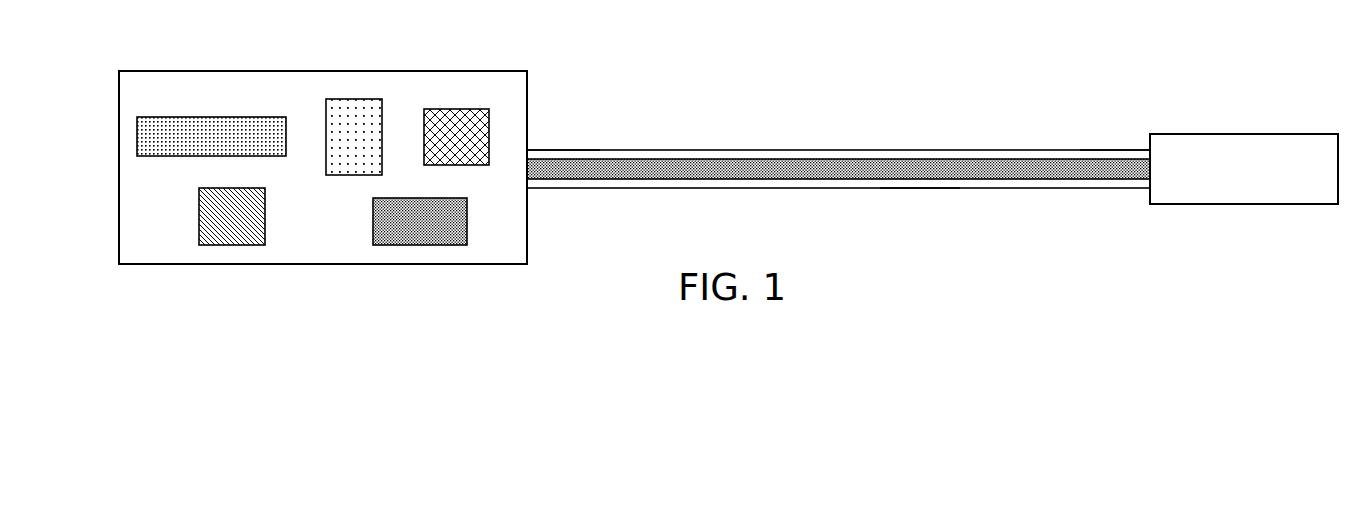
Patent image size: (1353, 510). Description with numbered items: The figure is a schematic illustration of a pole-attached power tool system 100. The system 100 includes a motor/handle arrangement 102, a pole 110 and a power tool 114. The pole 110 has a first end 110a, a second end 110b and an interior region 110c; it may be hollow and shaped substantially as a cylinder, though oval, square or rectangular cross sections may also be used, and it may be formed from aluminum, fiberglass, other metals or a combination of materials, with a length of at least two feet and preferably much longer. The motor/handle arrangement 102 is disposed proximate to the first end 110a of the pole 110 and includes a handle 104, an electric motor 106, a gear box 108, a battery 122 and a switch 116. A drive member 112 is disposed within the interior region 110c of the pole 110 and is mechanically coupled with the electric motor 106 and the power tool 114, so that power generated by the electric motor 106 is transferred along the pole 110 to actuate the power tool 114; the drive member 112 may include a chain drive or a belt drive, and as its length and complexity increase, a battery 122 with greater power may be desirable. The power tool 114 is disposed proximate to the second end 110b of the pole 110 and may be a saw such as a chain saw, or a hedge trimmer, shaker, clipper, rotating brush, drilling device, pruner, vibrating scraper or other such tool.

The pole-attached power tool system 100 is at (143, 25).
The motor/handle arrangement 102 is at (176, 71).
The handle 104 is at (223, 117).
The electric motor 106 is at (362, 99).
The gear box 108 is at (465, 109).
The pole 110 is at (738, 150).
The first end 110a is at (563, 118).
The second end 110b is at (1119, 119).
The interior region 110c is at (921, 195).
The drive member 112 is at (870, 160).
The power tool 114 is at (1243, 134).
The switch 116 is at (428, 245).
The battery 122 is at (242, 245).